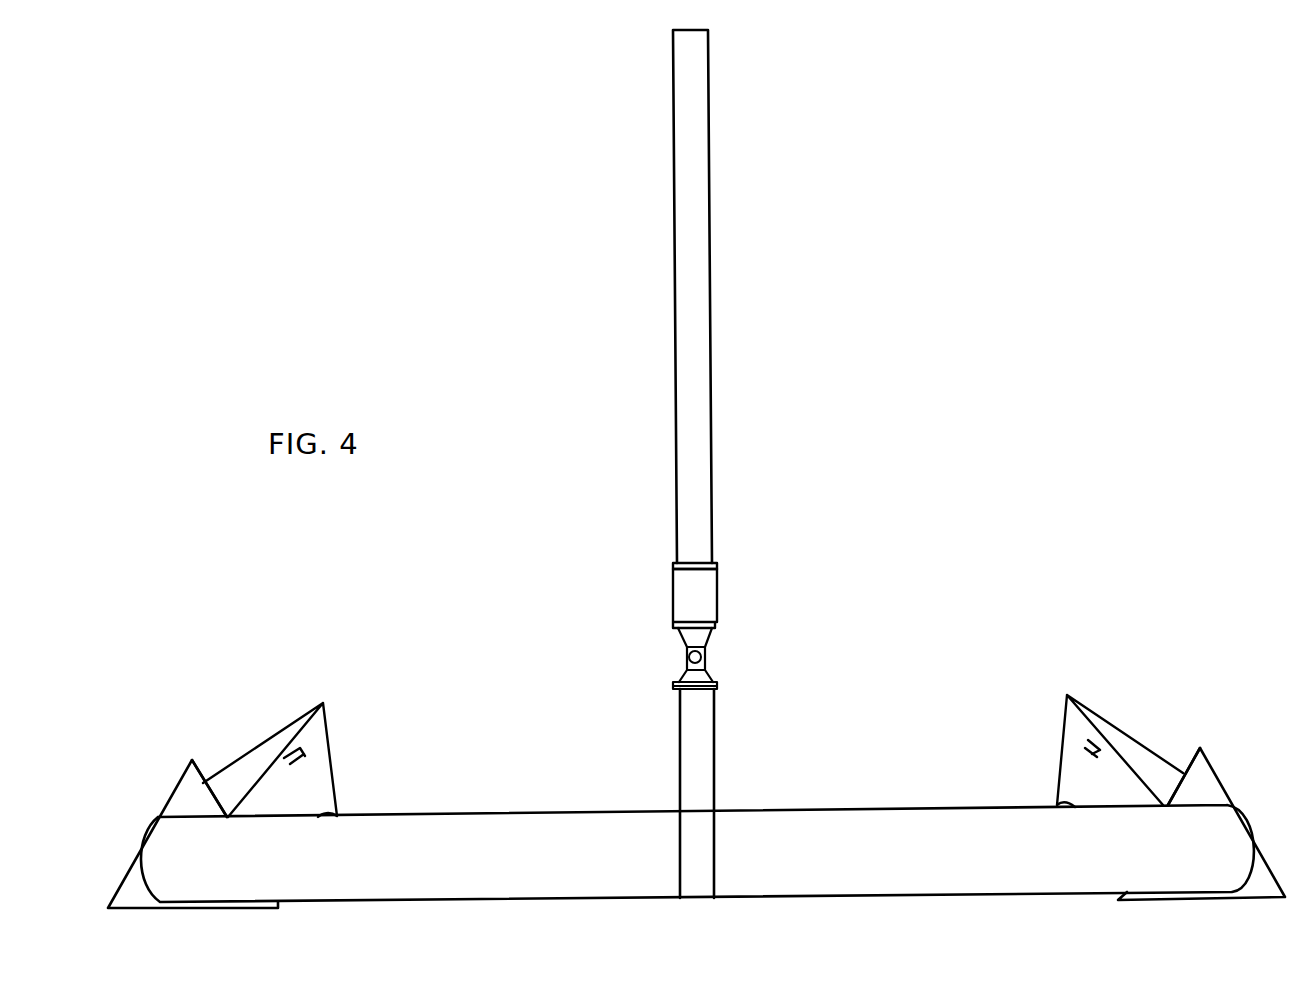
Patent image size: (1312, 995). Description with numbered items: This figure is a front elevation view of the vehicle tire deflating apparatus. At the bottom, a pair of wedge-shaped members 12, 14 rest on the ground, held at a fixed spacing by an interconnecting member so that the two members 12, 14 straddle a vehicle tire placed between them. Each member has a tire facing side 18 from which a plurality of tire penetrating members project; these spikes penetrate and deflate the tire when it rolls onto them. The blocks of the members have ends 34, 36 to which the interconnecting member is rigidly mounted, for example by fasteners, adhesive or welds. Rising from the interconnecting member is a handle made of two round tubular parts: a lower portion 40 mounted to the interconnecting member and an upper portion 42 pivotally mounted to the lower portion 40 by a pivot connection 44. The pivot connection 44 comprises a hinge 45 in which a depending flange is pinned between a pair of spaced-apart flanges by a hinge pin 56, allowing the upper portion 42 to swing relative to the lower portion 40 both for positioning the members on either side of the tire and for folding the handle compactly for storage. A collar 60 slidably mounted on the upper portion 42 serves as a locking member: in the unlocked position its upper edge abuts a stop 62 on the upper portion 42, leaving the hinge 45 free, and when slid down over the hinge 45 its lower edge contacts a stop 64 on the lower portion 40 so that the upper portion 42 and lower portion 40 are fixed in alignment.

The member 12 is at (182, 797).
The member 14 is at (1207, 763).
The tire facing side 18 is at (933, 822).
The end 34 is at (197, 793).
The end 36 is at (1207, 790).
The lower portion 40 is at (712, 787).
The upper portion 42 is at (707, 332).
The pivot connection 44 is at (766, 655).
The hinge 45 is at (696, 673).
The hinge pin 56 is at (690, 656).
The collar 60 is at (707, 603).
The stop 62 is at (718, 559).
The stop 64 is at (726, 685).